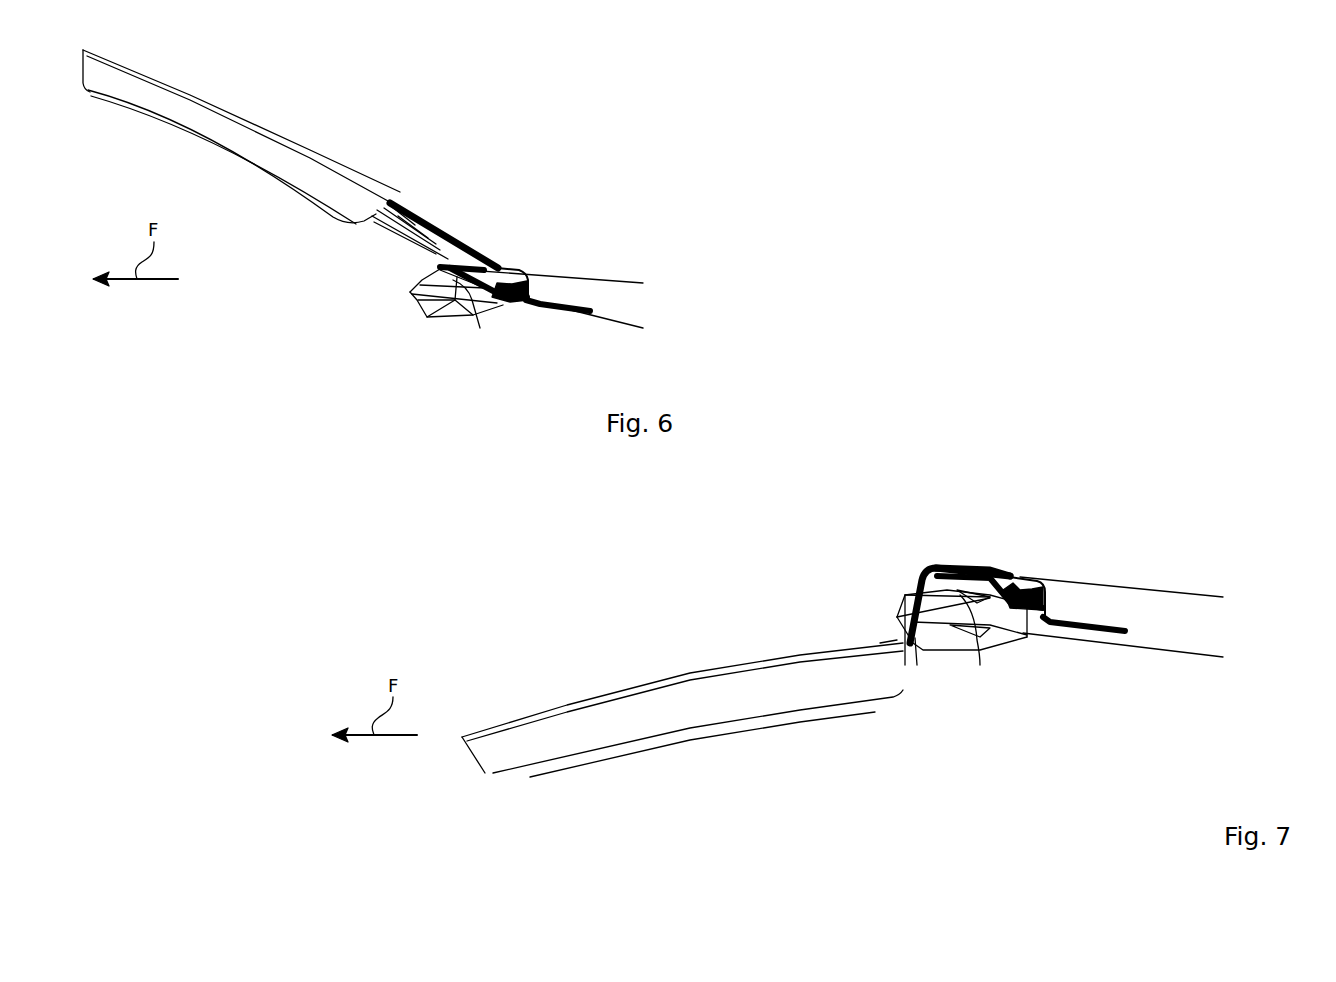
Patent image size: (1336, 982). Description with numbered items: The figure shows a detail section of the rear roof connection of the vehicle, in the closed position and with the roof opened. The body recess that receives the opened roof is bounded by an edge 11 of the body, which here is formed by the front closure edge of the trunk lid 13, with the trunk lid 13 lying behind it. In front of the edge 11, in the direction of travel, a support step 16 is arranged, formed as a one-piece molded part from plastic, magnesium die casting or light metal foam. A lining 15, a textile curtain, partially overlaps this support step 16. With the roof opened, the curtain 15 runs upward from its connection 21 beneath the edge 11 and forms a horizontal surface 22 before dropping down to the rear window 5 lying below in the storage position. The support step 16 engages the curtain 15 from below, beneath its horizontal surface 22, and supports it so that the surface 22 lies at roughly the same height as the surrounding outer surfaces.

In FIG. 6, the rear window 5 is at (294, 166).
In FIG. 7, the rear window 5 is at (734, 686).
In FIG. 6, the edge 11 is at (507, 263).
In FIG. 7, the edge 11 is at (1020, 570).
In FIG. 6, the trunk lid 13 is at (608, 293).
In FIG. 7, the trunk lid 13 is at (1130, 598).
In FIG. 7, the lining 15 is at (920, 577).
In FIG. 6, the support step 16 is at (480, 328).
In FIG. 7, the support step 16 is at (980, 665).
In FIG. 7, the connection 21 is at (1040, 637).
In FIG. 7, the horizontal surface 22 is at (951, 566).